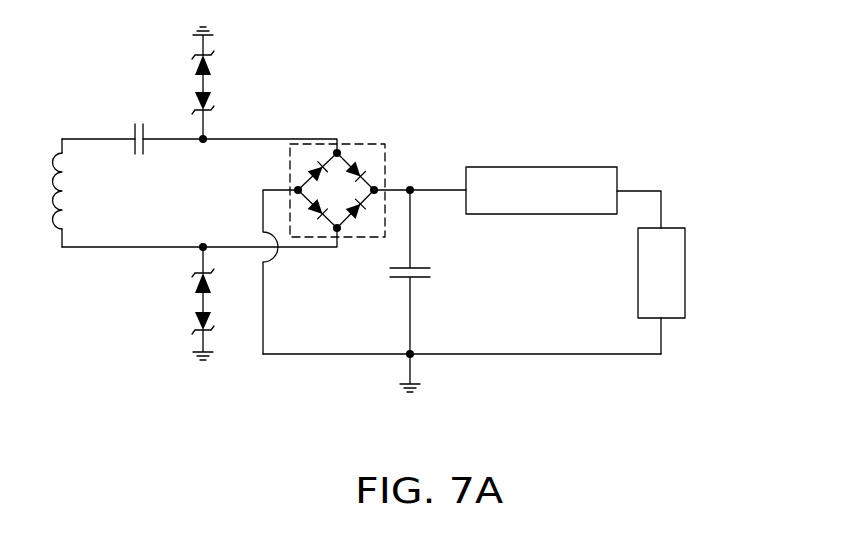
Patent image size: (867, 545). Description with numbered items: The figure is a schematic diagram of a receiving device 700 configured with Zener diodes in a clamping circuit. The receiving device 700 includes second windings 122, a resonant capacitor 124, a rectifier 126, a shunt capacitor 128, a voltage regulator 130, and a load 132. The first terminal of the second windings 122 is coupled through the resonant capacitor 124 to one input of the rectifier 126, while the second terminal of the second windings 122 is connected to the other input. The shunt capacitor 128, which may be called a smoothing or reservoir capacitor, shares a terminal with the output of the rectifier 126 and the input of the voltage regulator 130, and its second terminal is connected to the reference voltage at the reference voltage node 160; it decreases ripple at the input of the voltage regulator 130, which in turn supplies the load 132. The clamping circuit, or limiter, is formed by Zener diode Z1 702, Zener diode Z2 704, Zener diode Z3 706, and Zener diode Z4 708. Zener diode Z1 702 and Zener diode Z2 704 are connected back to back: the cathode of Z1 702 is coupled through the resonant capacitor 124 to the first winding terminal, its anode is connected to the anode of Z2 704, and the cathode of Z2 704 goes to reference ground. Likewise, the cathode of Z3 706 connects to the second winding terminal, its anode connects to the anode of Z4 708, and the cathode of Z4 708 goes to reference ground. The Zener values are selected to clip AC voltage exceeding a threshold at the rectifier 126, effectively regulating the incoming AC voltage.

The receiving device 700 is at (662, 62).
The second windings 122 is at (63, 195).
The resonant capacitor 124 is at (132, 127).
The rectifier 126 is at (387, 151).
The shunt capacitor 128 is at (432, 272).
The voltage regulator 130 is at (551, 167).
The load 132 is at (638, 278).
The VREF node 160 is at (407, 358).
The Zener diode Z1 702 is at (213, 98).
The Zener diode Z2 704 is at (194, 65).
The Zener diode Z3 706 is at (195, 283).
The Zener diode Z4 708 is at (192, 322).